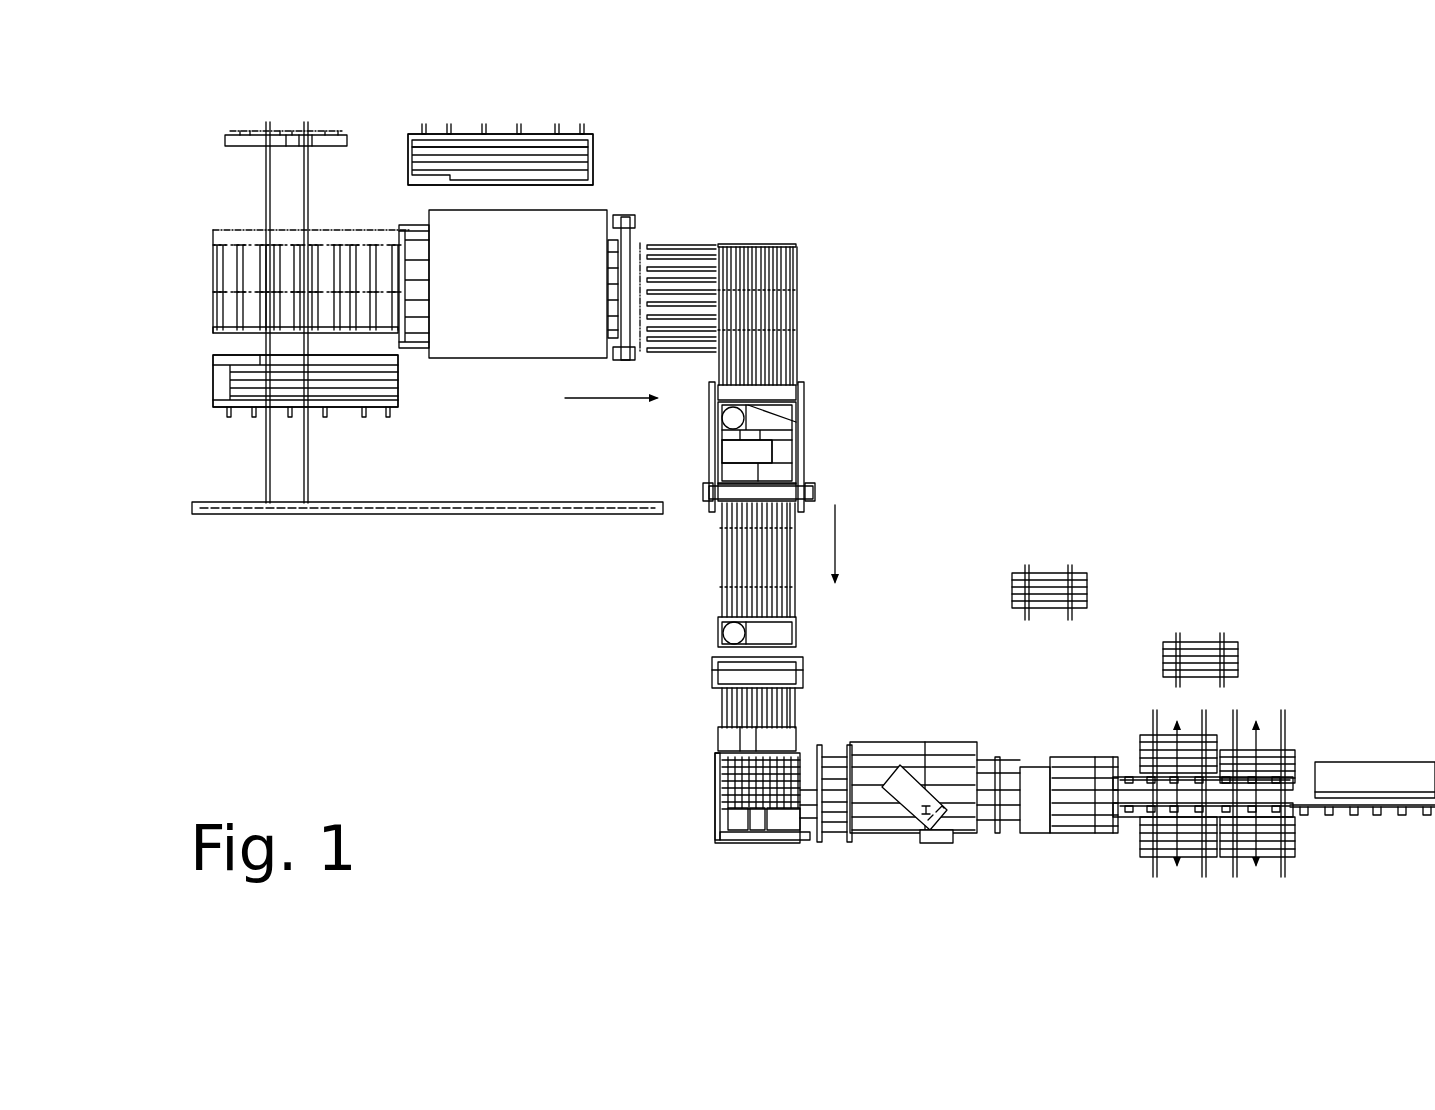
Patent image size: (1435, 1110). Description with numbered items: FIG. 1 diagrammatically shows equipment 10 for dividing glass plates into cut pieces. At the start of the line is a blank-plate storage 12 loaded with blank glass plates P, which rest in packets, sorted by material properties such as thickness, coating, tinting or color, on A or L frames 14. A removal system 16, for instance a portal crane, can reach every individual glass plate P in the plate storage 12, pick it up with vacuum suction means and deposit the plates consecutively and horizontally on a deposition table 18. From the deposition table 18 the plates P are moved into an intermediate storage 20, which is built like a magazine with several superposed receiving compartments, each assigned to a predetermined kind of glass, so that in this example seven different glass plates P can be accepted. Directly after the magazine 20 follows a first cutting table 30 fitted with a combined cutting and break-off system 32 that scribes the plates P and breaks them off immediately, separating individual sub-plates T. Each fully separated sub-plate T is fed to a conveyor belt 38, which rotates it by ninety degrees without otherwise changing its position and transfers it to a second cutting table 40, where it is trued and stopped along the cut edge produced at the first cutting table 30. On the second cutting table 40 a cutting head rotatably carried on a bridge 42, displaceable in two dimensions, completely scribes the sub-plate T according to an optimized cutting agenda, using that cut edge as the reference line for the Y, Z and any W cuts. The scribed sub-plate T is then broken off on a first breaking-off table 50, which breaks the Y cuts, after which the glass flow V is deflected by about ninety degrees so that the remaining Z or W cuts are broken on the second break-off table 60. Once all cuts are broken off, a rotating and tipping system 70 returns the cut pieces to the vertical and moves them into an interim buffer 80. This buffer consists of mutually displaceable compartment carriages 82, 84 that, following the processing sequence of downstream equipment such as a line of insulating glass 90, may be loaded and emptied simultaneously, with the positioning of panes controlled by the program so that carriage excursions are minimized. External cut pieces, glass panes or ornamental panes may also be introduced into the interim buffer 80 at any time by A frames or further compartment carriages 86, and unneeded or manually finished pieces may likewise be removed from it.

The equipment 10 is at (1046, 270).
The blank-plate storage 12 is at (215, 421).
The A or L frames 14 is at (218, 378).
The removal system 16 is at (245, 160).
The deposition table 18 is at (245, 292).
The intermediate storage 20 is at (532, 364).
The first cutting table 30 is at (652, 218).
The cutting and break-off system 32 is at (627, 215).
The conveyor belt 38 is at (698, 270).
The second cutting table 40 is at (822, 408).
The bridge 42 is at (780, 496).
The first breaking-off table 50 is at (735, 670).
The second break-off table 60 is at (832, 755).
The rotating and tipping system 70 is at (910, 735).
The interim buffer 80 is at (1268, 655).
The compartment carriage 82 is at (1282, 756).
The compartment carriage 84 is at (1287, 862).
The further compartment carriages 86 is at (1073, 574).
The line of insulating glass 90 is at (1400, 760).
The glass plates P is at (492, 150).
The sub-plates T is at (780, 450).
The glass flow V is at (600, 398).